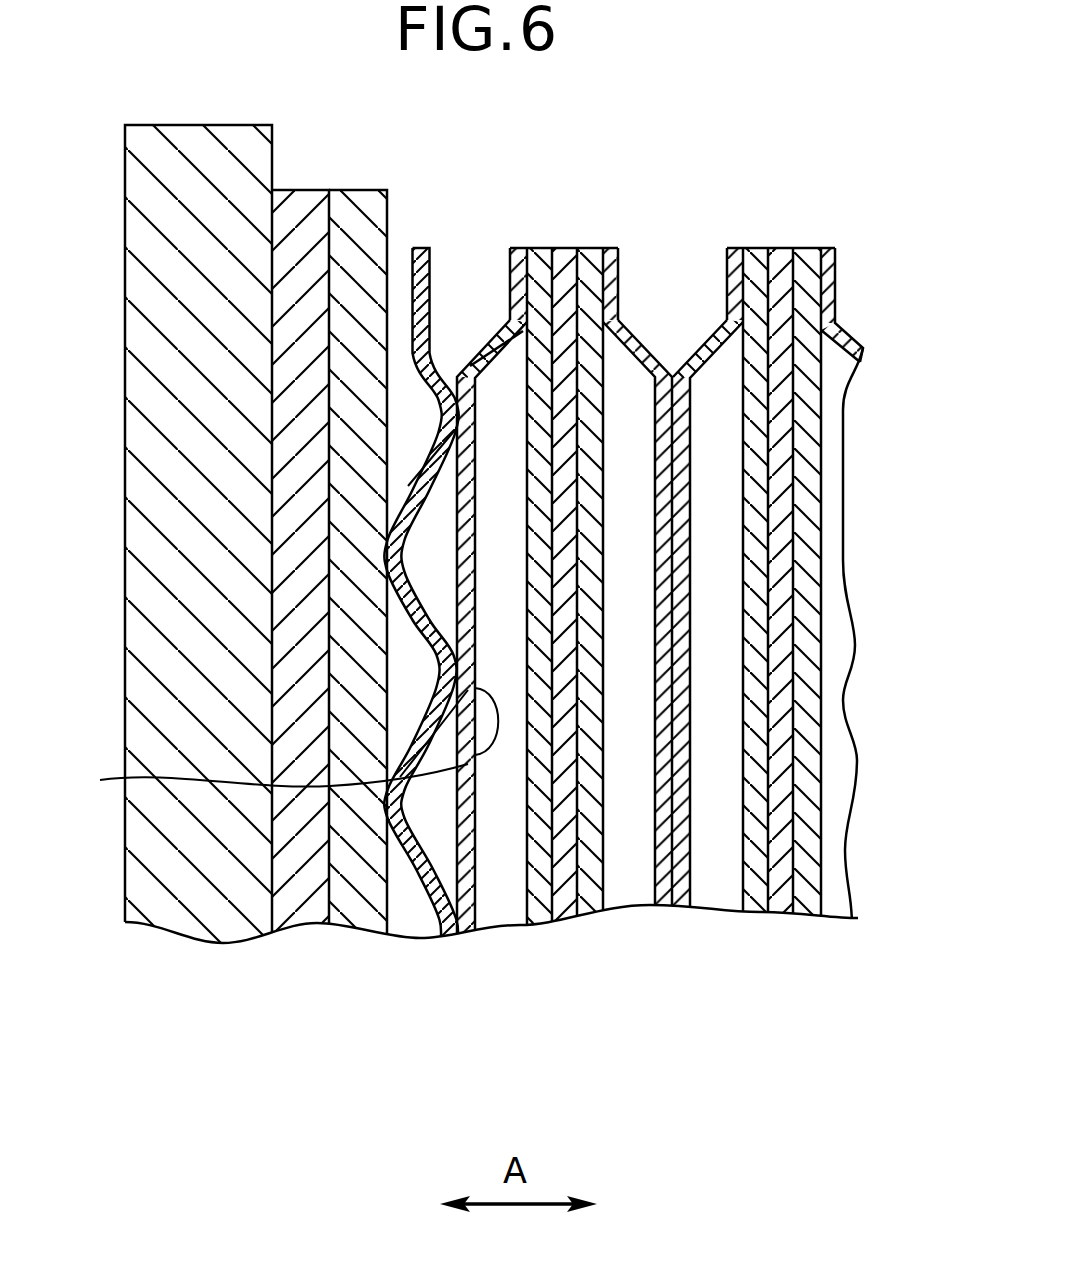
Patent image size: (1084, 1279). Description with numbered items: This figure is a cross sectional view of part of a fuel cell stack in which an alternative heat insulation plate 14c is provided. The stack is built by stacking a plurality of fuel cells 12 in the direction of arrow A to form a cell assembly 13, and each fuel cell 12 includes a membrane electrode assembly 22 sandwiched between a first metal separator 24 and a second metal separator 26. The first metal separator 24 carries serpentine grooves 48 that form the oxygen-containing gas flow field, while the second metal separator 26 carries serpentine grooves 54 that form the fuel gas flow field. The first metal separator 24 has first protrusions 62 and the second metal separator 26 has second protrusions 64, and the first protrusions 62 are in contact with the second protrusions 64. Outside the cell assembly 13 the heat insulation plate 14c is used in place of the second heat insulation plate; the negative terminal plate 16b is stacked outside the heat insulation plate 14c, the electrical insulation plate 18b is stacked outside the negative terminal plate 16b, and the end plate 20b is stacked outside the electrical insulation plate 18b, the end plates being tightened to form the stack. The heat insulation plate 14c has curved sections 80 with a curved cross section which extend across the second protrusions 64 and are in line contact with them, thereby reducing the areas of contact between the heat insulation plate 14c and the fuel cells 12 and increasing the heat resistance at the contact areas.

The fuel cell 12 is at (452, 605).
The cell assembly 13 is at (711, 112).
The heat insulation plate 14c is at (448, 326).
The negative terminal plate 16b is at (363, 233).
The electrical insulation plate 18b is at (297, 217).
The end plate 20b is at (190, 145).
The membrane electrode assembly 22 is at (570, 920).
The first metal separator 24 is at (646, 878).
The second metal separator 26 is at (479, 916).
The grooves 48 is at (637, 757).
The grooves 54 is at (508, 543).
The first protrusions 62 is at (663, 900).
The second protrusions 64 is at (683, 900).
The curved sections 80 is at (270, 747).